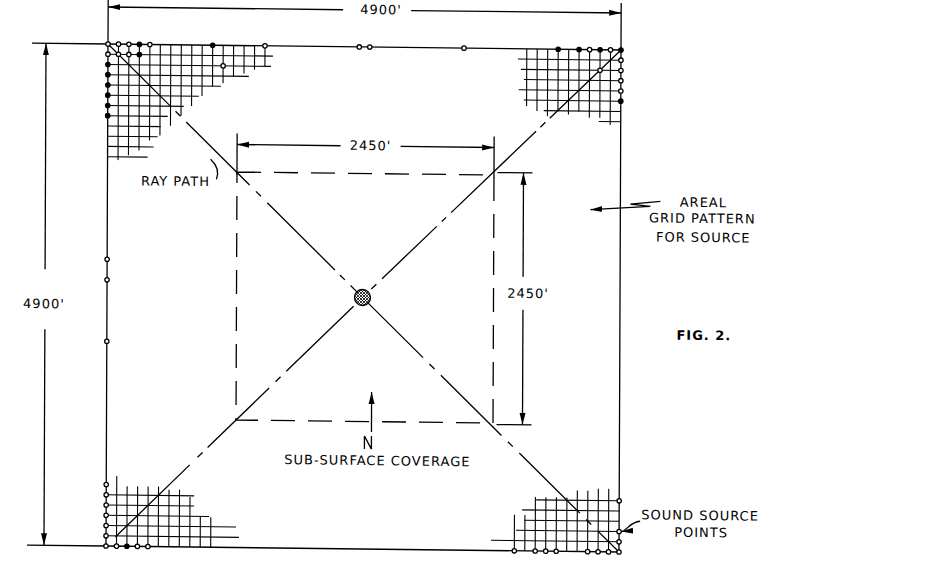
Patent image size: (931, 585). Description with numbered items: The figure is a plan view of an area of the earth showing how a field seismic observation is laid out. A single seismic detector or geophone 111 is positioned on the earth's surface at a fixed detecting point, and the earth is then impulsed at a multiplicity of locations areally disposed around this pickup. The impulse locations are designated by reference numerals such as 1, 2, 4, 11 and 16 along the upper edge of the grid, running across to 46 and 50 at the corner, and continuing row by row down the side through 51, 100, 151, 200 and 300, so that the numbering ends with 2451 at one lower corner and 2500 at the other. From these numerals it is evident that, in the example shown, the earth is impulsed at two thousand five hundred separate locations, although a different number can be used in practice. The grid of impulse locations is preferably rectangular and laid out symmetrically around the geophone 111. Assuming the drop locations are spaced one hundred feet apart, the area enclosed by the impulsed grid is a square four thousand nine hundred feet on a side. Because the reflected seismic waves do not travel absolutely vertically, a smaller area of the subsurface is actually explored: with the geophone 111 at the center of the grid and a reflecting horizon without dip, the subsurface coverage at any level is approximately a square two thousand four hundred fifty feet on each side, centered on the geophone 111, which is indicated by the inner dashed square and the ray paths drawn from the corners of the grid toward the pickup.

The seismic impulse location 1 is at (107, 47).
The seismic impulse location 2 is at (118, 45).
The seismic impulse location 4 is at (138, 45).
The seismic impulse location 11 is at (212, 45).
The seismic impulse location 16 is at (264, 45).
The seismic impulse location 46 is at (578, 45).
The seismic impulse location 50 is at (621, 46).
The seismic impulse location 51 is at (105, 58).
The seismic impulse location 100 is at (622, 57).
The seismic impulse location 151 is at (105, 78).
The seismic impulse location 200 is at (622, 78).
The seismic impulse location 300 is at (622, 98).
The seismic impulse location 2451 is at (107, 550).
The seismic impulse location 2500 is at (620, 550).
The seismic detector or geophone 111 is at (371, 297).